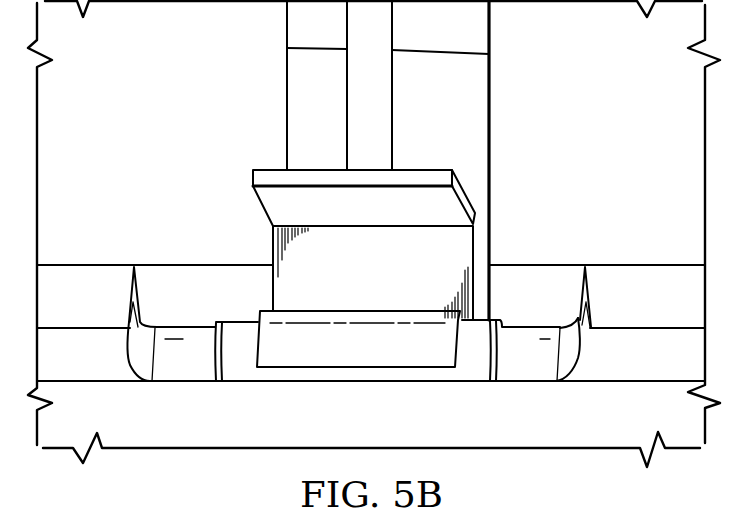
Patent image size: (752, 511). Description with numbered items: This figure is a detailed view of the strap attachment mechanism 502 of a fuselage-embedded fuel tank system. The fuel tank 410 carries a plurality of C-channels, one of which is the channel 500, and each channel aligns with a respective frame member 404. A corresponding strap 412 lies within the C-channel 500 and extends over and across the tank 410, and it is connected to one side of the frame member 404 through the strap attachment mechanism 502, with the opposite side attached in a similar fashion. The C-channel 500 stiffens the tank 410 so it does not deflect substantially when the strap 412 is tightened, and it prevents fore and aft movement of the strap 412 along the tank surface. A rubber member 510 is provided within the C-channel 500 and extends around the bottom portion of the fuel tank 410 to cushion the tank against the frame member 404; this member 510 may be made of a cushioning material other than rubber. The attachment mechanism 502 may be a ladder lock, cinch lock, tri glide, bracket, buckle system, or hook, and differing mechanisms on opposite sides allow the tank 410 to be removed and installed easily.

The frame member 404 is at (486, 101).
The fuel tank 410 is at (98, 342).
The strap 412 is at (343, 322).
The C-channel 500 is at (195, 345).
The strap attachment mechanism 502 is at (516, 285).
The rubber member 510 is at (241, 368).